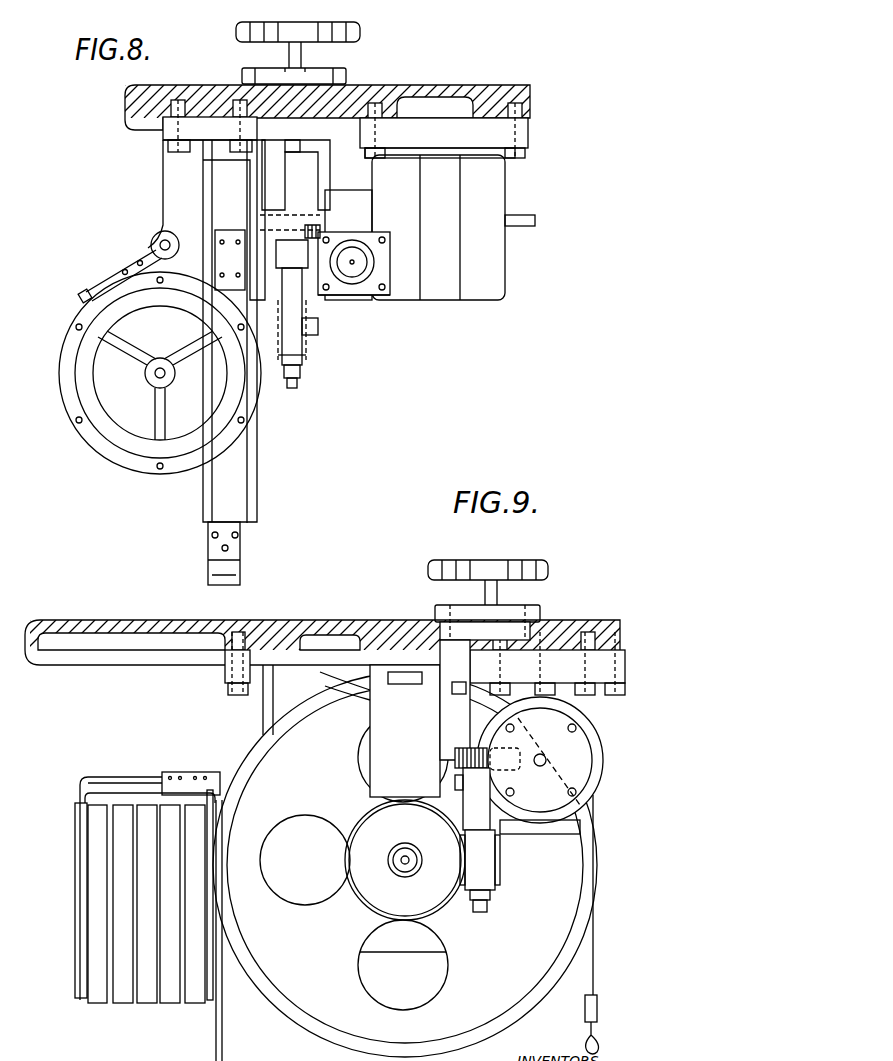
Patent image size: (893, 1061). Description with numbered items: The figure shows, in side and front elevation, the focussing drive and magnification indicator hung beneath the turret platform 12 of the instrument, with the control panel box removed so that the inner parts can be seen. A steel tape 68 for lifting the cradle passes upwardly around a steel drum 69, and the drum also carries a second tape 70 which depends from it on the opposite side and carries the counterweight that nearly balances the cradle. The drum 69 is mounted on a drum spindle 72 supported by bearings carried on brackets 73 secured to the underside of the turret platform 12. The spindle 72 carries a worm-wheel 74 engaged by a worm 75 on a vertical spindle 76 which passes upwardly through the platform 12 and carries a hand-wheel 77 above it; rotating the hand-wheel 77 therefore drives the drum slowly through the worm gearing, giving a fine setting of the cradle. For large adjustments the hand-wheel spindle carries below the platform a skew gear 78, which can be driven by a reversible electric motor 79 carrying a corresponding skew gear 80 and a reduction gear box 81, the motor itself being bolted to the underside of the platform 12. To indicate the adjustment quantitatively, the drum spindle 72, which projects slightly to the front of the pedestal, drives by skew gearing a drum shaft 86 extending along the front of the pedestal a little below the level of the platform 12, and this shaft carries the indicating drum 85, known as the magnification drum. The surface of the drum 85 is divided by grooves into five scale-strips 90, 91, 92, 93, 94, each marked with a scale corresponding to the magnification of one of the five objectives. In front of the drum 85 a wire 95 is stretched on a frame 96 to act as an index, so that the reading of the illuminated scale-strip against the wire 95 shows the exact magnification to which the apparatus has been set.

In FIG. 8, the turret platform 12 is at (232, 95).
In FIG. 9, the turret platform 12 is at (265, 618).
In FIG. 8, the steel tape 68 is at (210, 558).
In FIG. 9, the steel tape 68 is at (595, 948).
In FIG. 8, the steel drum 69 is at (258, 472).
In FIG. 9, the steel drum 69 is at (515, 975).
In FIG. 9, the second tape 70 is at (222, 1012).
In FIG. 8, the drum spindle 72 is at (318, 323).
In FIG. 9, the drum spindle 72 is at (393, 868).
In FIG. 8, the brackets 73 is at (177, 203).
In FIG. 9, the brackets 73 is at (385, 716).
In FIG. 8, the worm-wheel 74 is at (300, 385).
In FIG. 9, the worm-wheel 74 is at (437, 912).
In FIG. 8, the worm 75 is at (305, 355).
In FIG. 9, the worm 75 is at (483, 855).
In FIG. 9, the vertical spindle 76 is at (482, 912).
In FIG. 8, the hand-wheel 77 is at (362, 32).
In FIG. 9, the hand-wheel 77 is at (510, 560).
In FIG. 8, the skew gear 78 is at (335, 256).
In FIG. 9, the skew gear 78 is at (455, 785).
In FIG. 8, the electric motor 79 is at (467, 293).
In FIG. 9, the electric motor 79 is at (600, 780).
In FIG. 8, the skew gear 80 is at (355, 292).
In FIG. 8, the reduction gear box 81 is at (362, 212).
In FIG. 8, the indicating drum 85 is at (65, 417).
In FIG. 9, the indicating drum 85 is at (78, 962).
In FIG. 8, the drum shaft 86 is at (160, 375).
In FIG. 9, the scale-strip 90 is at (92, 1003).
In FIG. 9, the scale-strip 91 is at (118, 1003).
In FIG. 9, the scale-strip 92 is at (144, 1003).
In FIG. 9, the scale-strip 93 is at (171, 1005).
In FIG. 9, the scale-strip 94 is at (197, 1005).
In FIG. 8, the wire 95 is at (135, 268).
In FIG. 8, the frame 96 is at (103, 292).
In FIG. 9, the frame 96 is at (120, 777).